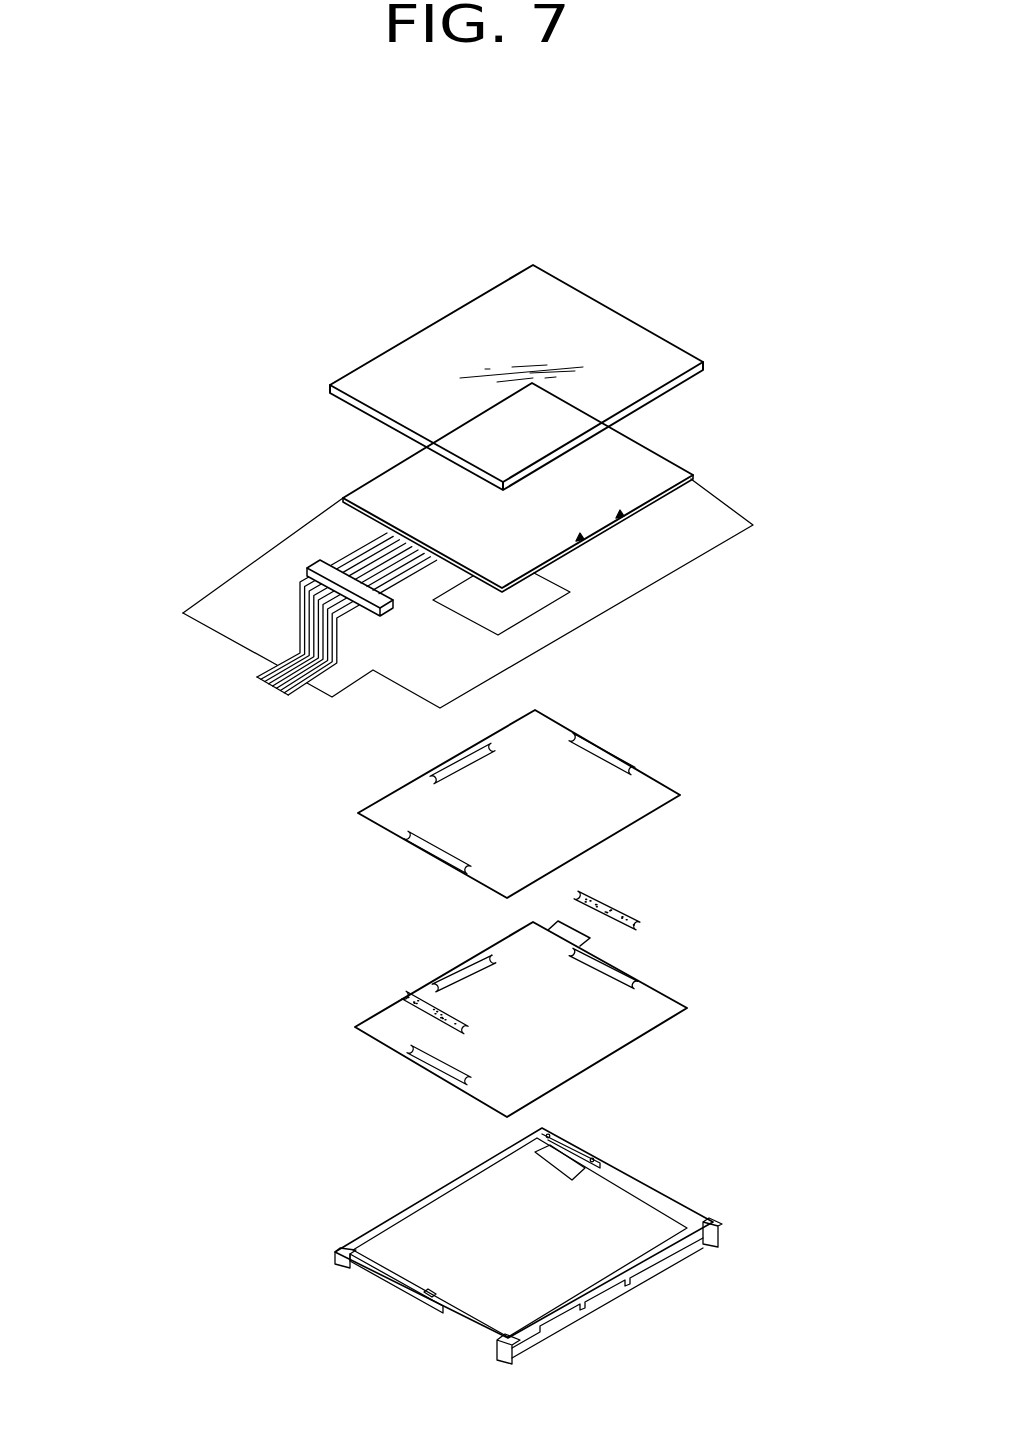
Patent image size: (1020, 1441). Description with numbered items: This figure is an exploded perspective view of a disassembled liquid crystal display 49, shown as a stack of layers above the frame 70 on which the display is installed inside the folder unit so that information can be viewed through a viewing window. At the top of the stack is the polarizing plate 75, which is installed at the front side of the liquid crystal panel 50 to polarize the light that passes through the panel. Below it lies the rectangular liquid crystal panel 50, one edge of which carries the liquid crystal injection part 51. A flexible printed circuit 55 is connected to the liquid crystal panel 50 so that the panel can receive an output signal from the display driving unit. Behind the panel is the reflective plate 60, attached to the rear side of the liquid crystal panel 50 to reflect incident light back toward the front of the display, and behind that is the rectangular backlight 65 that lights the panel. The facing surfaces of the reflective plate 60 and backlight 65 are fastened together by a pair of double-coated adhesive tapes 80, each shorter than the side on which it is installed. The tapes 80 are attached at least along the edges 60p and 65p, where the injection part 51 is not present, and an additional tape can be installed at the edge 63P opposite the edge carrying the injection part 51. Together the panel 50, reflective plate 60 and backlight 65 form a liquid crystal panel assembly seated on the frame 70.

The liquid crystal display 49 is at (198, 342).
The polarizing plate 75 is at (362, 388).
The liquid crystal panel 50 is at (383, 478).
The liquid crystal injection part 51 is at (582, 540).
The flexible printed circuit 55 is at (235, 620).
The reflective plate 60 is at (400, 807).
The edge 63P is at (430, 772).
The edge 60p is at (610, 758).
The edge 65p is at (423, 852).
The double-coated adhesive tape 80 is at (625, 908).
The backlight 65 is at (403, 1030).
The frame 70 is at (383, 1225).